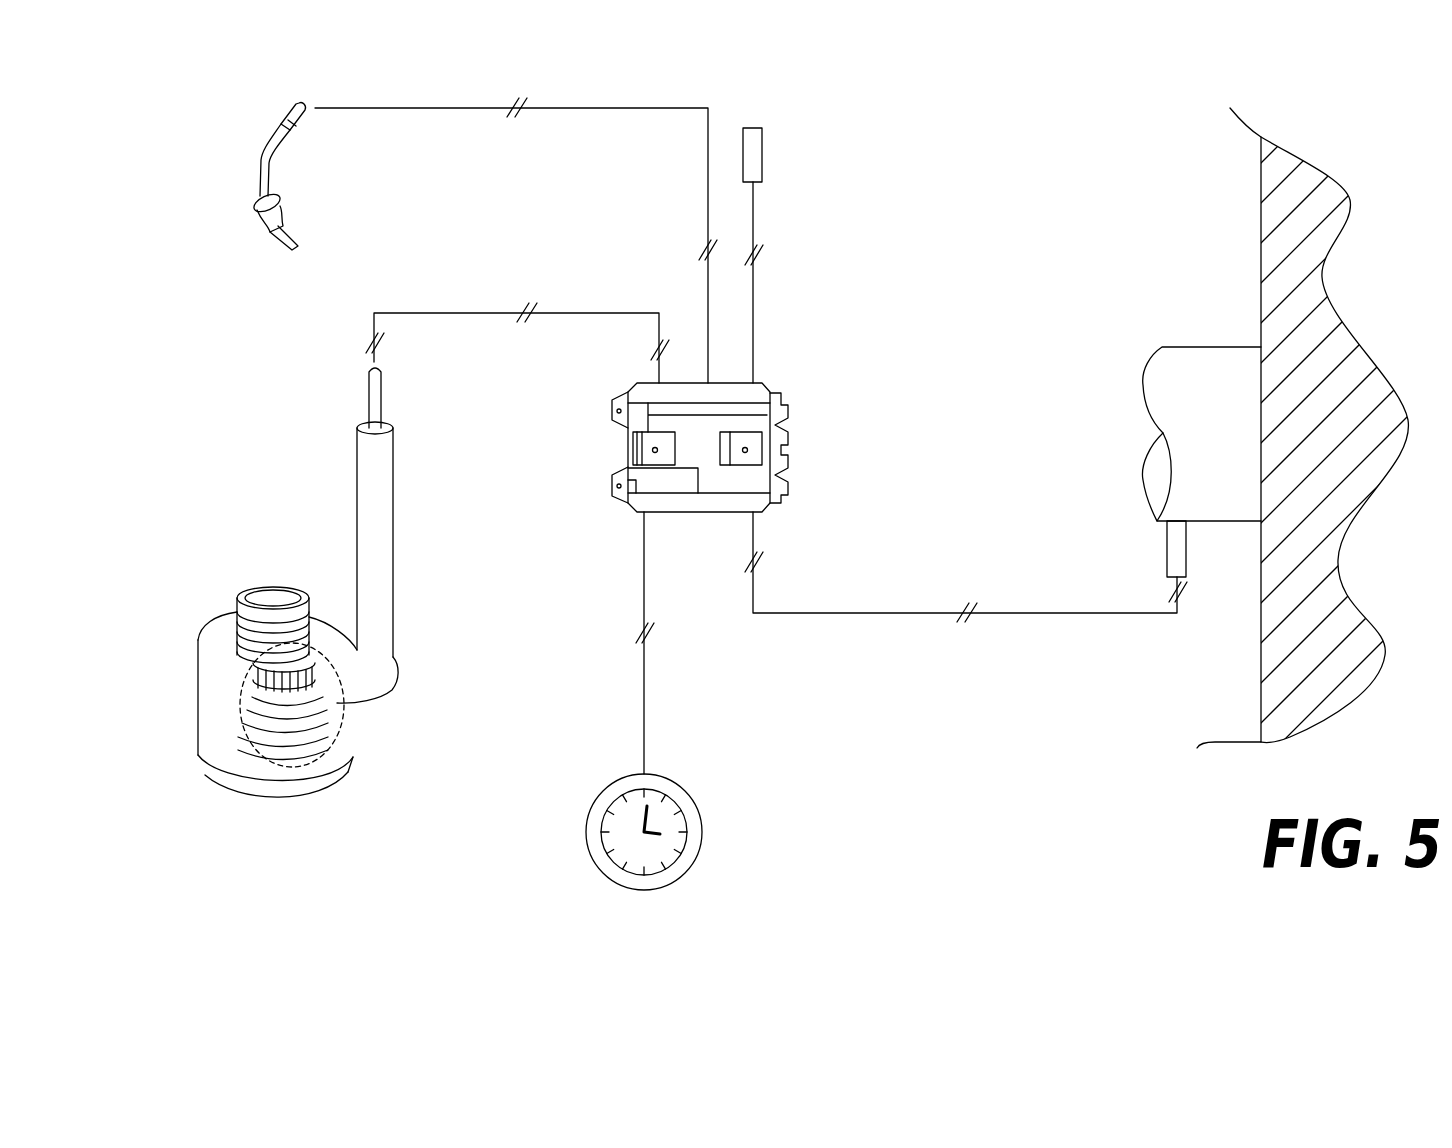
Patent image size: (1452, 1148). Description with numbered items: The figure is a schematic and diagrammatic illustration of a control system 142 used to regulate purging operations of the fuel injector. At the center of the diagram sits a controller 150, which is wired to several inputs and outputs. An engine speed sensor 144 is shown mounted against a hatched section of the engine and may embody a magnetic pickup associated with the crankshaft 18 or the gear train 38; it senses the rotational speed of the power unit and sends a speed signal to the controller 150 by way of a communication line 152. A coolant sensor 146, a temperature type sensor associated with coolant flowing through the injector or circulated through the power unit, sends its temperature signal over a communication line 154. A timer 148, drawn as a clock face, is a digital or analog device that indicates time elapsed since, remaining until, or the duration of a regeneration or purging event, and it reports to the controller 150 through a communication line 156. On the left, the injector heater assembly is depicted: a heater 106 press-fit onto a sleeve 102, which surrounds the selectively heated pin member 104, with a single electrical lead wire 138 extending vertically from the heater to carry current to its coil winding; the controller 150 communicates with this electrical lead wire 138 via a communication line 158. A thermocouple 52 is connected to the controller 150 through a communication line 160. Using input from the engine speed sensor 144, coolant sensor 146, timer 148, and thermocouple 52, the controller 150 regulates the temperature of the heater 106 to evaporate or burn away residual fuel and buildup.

The crankshaft 18 is at (1185, 368).
The gear train 38 is at (1278, 217).
The thermocouple 52 is at (268, 164).
The sleeve 102 is at (293, 788).
The selectively heated pin member 104 is at (237, 592).
The heater 106 is at (310, 710).
The electrical lead wire 138 is at (380, 528).
The control system 142 is at (859, 786).
The engine speed sensor 144 is at (1166, 550).
The coolant sensor 146 is at (762, 152).
The timer 148 is at (680, 783).
The controller 150 is at (750, 470).
The communication line 152 is at (900, 613).
The communication line 154 is at (753, 330).
The communication line 156 is at (644, 707).
The communication line 158 is at (568, 313).
The communication line 160 is at (457, 108).